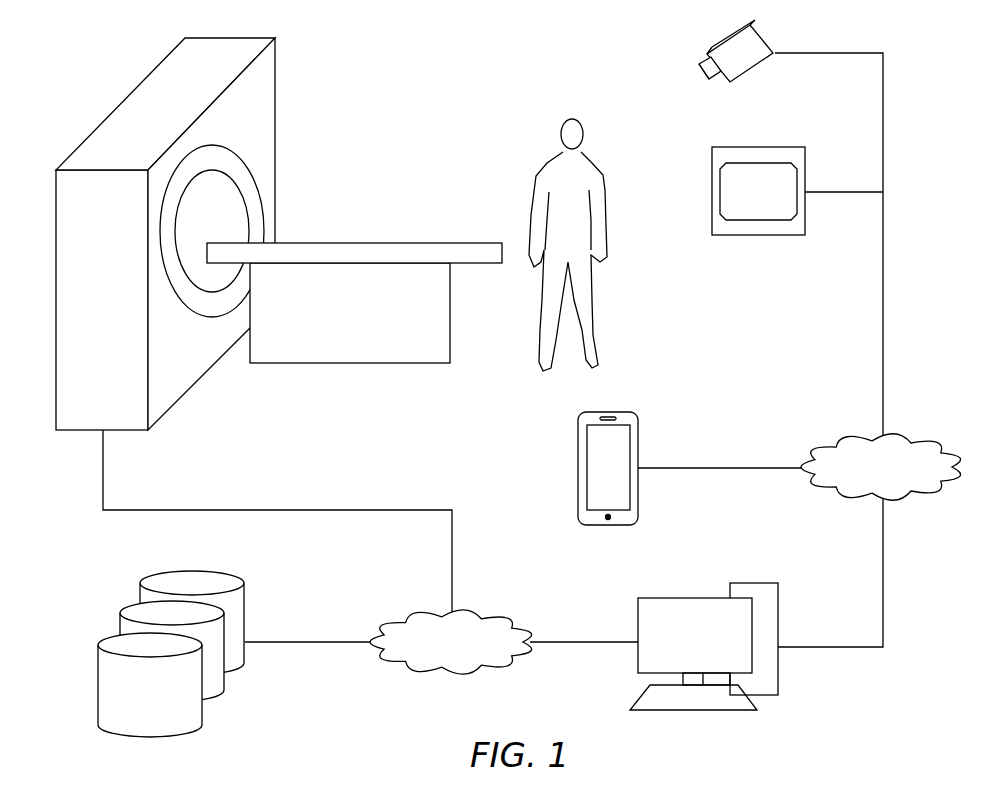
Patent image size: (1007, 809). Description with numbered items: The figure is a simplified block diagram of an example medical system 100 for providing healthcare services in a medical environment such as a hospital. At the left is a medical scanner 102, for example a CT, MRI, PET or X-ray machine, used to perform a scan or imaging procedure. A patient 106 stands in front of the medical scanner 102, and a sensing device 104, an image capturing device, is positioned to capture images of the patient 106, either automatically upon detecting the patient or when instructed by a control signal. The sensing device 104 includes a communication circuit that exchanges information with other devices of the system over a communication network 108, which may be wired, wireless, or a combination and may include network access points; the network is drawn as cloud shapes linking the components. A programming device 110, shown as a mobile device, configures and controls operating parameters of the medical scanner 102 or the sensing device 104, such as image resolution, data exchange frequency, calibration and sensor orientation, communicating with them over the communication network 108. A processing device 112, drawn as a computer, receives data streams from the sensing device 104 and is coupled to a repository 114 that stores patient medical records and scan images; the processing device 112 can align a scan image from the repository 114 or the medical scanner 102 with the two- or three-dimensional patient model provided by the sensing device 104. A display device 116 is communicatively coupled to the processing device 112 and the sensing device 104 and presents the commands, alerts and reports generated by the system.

The medical system 100 is at (458, 68).
The medical scanner 102 is at (265, 110).
The sensing device 104 is at (740, 68).
The patient 106 is at (600, 200).
The communication network 108 is at (826, 458).
The programming device 110 is at (578, 485).
The processing device 112 is at (695, 607).
The repository 114 is at (120, 720).
The display device 116 is at (785, 227).